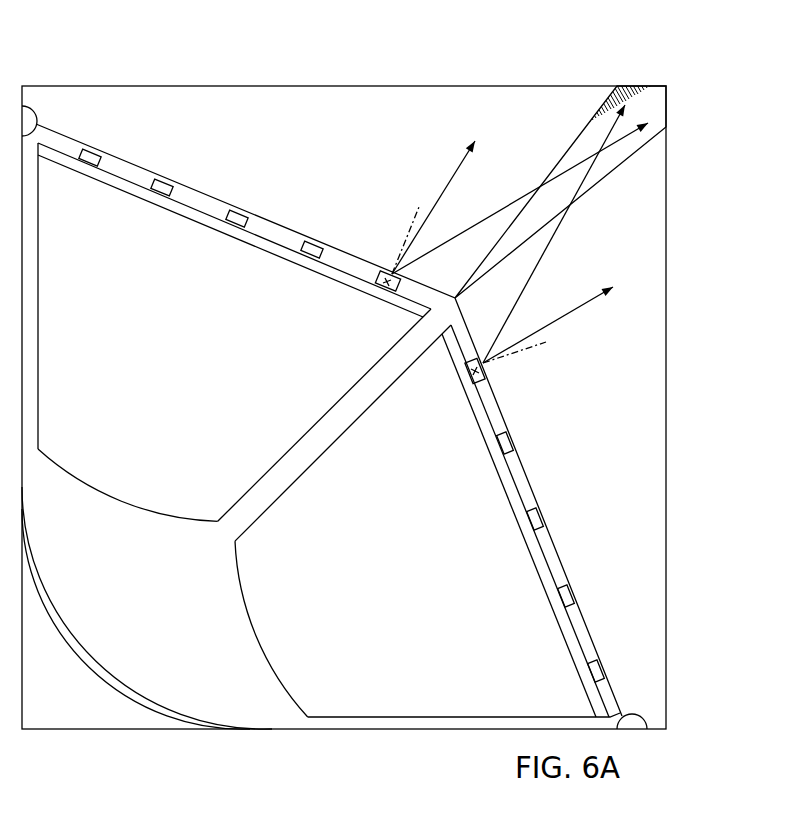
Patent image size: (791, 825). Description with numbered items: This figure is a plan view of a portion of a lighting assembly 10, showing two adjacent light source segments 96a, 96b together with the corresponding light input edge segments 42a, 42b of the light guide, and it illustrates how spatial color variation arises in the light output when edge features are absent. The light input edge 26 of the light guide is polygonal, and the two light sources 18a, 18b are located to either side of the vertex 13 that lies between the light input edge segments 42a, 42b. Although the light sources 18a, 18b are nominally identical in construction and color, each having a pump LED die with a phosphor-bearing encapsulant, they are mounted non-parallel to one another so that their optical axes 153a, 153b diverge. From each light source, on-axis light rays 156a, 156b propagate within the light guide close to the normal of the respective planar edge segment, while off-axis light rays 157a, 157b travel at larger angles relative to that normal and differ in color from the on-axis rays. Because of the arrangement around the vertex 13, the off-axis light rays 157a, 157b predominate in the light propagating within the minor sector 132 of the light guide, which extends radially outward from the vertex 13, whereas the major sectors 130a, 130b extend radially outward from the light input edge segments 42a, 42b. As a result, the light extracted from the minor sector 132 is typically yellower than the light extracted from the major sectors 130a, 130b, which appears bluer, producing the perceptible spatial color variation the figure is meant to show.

The lighting assembly 10 is at (129, 62).
The vertex 13 is at (455, 298).
The light input edge 26 is at (126, 163).
The light source segment 96a is at (190, 212).
The light source segment 96b is at (510, 487).
The light input edge segment 42a is at (273, 223).
The light input edge segment 42b is at (547, 557).
The light source 18a is at (378, 288).
The light source 18b is at (469, 386).
The major sector 130a is at (320, 125).
The major sector 130b is at (622, 440).
The minor sector 132 is at (641, 93).
The optical axis 153a is at (418, 212).
The optical axis 153b is at (547, 352).
The on-axis light ray 156a is at (462, 158).
The on-axis light ray 156b is at (580, 310).
The off-axis light ray 157a is at (522, 197).
The off-axis light ray 157b is at (540, 260).